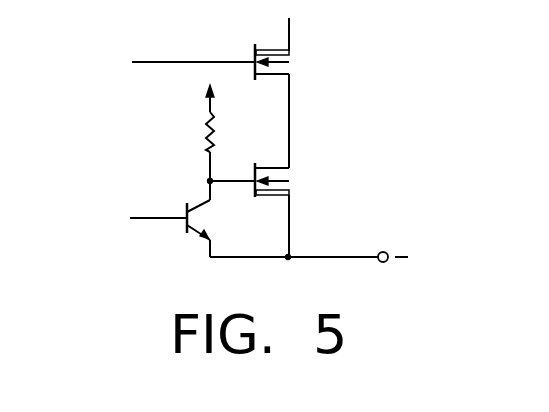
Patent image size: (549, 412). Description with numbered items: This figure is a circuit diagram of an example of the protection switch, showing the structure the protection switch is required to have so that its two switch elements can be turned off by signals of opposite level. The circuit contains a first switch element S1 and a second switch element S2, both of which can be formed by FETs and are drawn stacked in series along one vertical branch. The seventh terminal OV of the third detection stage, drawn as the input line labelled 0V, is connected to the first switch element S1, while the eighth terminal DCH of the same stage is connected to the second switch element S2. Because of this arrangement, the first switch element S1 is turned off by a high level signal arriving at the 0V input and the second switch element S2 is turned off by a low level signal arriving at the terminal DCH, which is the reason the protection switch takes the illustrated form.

The first switch element S1 is at (300, 180).
The second switch element S2 is at (300, 49).
The eighth terminal DCH is at (147, 62).
The seventh terminal 0V is at (117, 217).